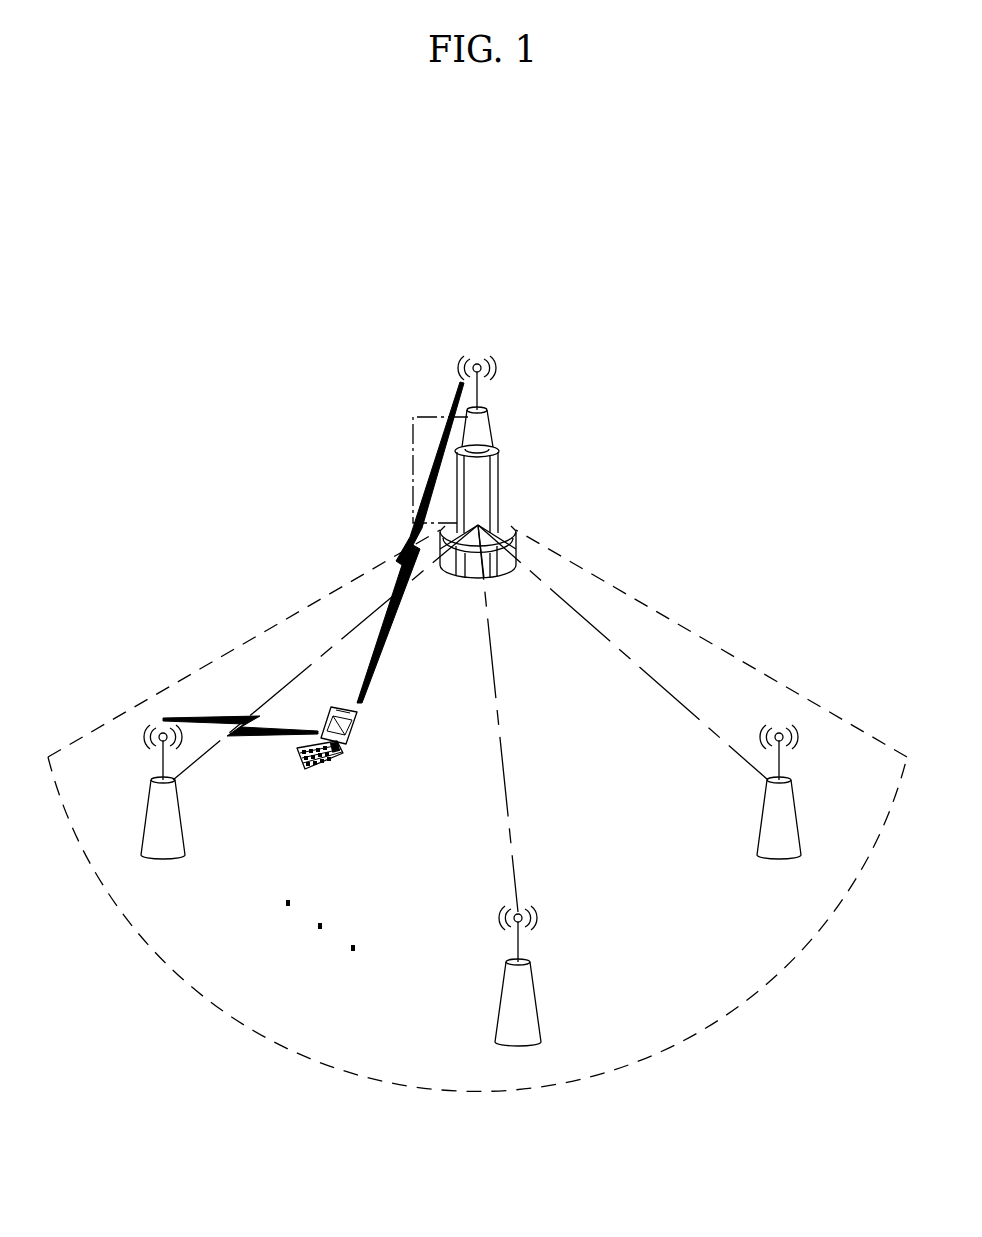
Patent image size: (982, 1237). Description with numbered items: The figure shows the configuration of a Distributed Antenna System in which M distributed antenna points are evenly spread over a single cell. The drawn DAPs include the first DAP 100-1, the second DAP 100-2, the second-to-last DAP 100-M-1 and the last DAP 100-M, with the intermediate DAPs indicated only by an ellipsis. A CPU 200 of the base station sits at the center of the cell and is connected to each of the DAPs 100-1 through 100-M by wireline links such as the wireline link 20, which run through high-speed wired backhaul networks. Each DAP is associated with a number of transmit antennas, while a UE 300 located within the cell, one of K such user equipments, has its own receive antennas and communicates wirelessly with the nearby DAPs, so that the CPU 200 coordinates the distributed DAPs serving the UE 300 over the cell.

The first distributed antenna point (DAP) 100-1 is at (517, 439).
The CPU 200 is at (512, 511).
The wireline link 20 is at (470, 718).
The UE 300 is at (372, 776).
The second DAP 100-2 is at (162, 819).
The M-th DAP 100-M is at (784, 819).
The (M-1)-th DAP 100-M-1 is at (560, 979).